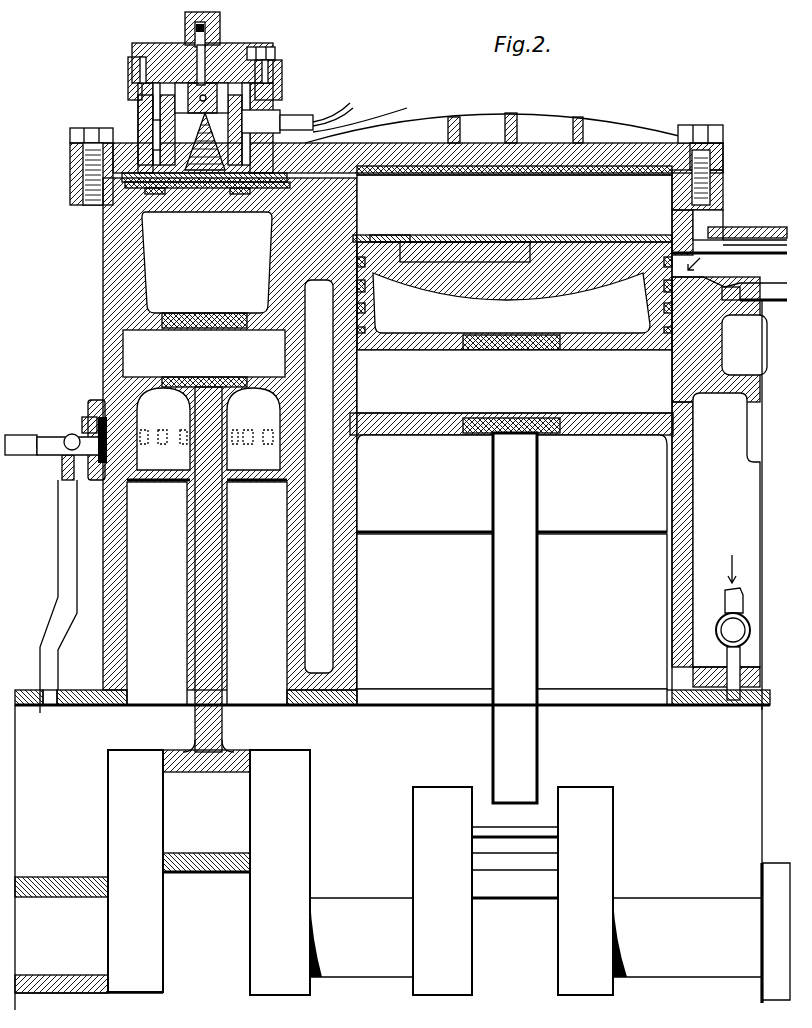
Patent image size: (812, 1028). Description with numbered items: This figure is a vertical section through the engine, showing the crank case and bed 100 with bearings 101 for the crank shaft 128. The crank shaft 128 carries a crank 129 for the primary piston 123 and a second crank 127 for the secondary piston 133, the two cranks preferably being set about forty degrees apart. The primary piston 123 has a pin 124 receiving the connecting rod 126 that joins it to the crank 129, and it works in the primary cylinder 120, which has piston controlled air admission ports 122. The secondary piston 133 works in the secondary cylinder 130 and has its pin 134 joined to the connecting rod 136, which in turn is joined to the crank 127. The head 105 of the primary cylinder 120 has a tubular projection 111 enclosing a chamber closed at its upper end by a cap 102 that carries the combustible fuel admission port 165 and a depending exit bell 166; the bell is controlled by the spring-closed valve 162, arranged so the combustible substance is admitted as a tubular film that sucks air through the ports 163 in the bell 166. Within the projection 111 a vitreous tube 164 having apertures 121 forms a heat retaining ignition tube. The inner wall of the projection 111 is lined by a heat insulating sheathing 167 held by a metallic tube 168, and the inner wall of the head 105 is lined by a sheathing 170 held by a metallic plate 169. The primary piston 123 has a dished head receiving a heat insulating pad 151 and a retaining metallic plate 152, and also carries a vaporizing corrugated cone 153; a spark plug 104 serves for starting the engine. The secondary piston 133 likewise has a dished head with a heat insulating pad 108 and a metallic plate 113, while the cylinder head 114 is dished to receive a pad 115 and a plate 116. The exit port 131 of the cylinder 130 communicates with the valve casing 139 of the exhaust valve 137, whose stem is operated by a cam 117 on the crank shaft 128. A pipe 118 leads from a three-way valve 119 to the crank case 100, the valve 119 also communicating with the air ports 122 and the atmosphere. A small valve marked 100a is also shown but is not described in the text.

The crank case and bed 100 is at (392, 567).
The valve 100a is at (727, 633).
The bearings 101 is at (62, 878).
The cap 102 is at (233, 62).
The spark plug 104 is at (377, 110).
The head 105 is at (70, 157).
The heat insulating pad 108 is at (435, 242).
The tubular projection 111 is at (143, 113).
The metallic plate 113 is at (391, 233).
The cylinder head 114 is at (477, 141).
The pad 115 is at (530, 165).
The plate 116 is at (527, 172).
The cam 117 is at (760, 878).
The pipe 118 is at (67, 550).
The three-way valve 119 is at (62, 432).
The primary cylinder 120 is at (128, 533).
The apertures 121 is at (157, 83).
The air admission ports 122 is at (90, 455).
The primary piston 123 is at (207, 270).
The pin 124 is at (204, 358).
The connecting rod 126 is at (192, 607).
The second crank 127 is at (413, 835).
The crank shaft 128 is at (536, 937).
The crank 129 is at (260, 919).
The secondary cylinder 130 is at (357, 630).
The exit port 131 is at (722, 228).
The secondary piston 133 is at (512, 292).
The pin 134 is at (511, 392).
The connecting rod 136 is at (537, 512).
The exhaust valve 137 is at (752, 288).
The valve casing 139 is at (710, 358).
The heat insulating pad 151 is at (167, 192).
The retaining metallic plate 152 is at (240, 190).
The vaporizing corrugated cone 153 is at (162, 128).
The valve 162 is at (273, 60).
The ports 163 is at (177, 70).
The tube 164 is at (145, 127).
The combustible fuel admission port 165 is at (140, 60).
The exit bell 166 is at (277, 108).
The heat insulating sheathing 167 is at (300, 116).
The metallic tube 168 is at (351, 105).
The metallic plate 169 is at (123, 200).
The sheathing 170 is at (70, 176).